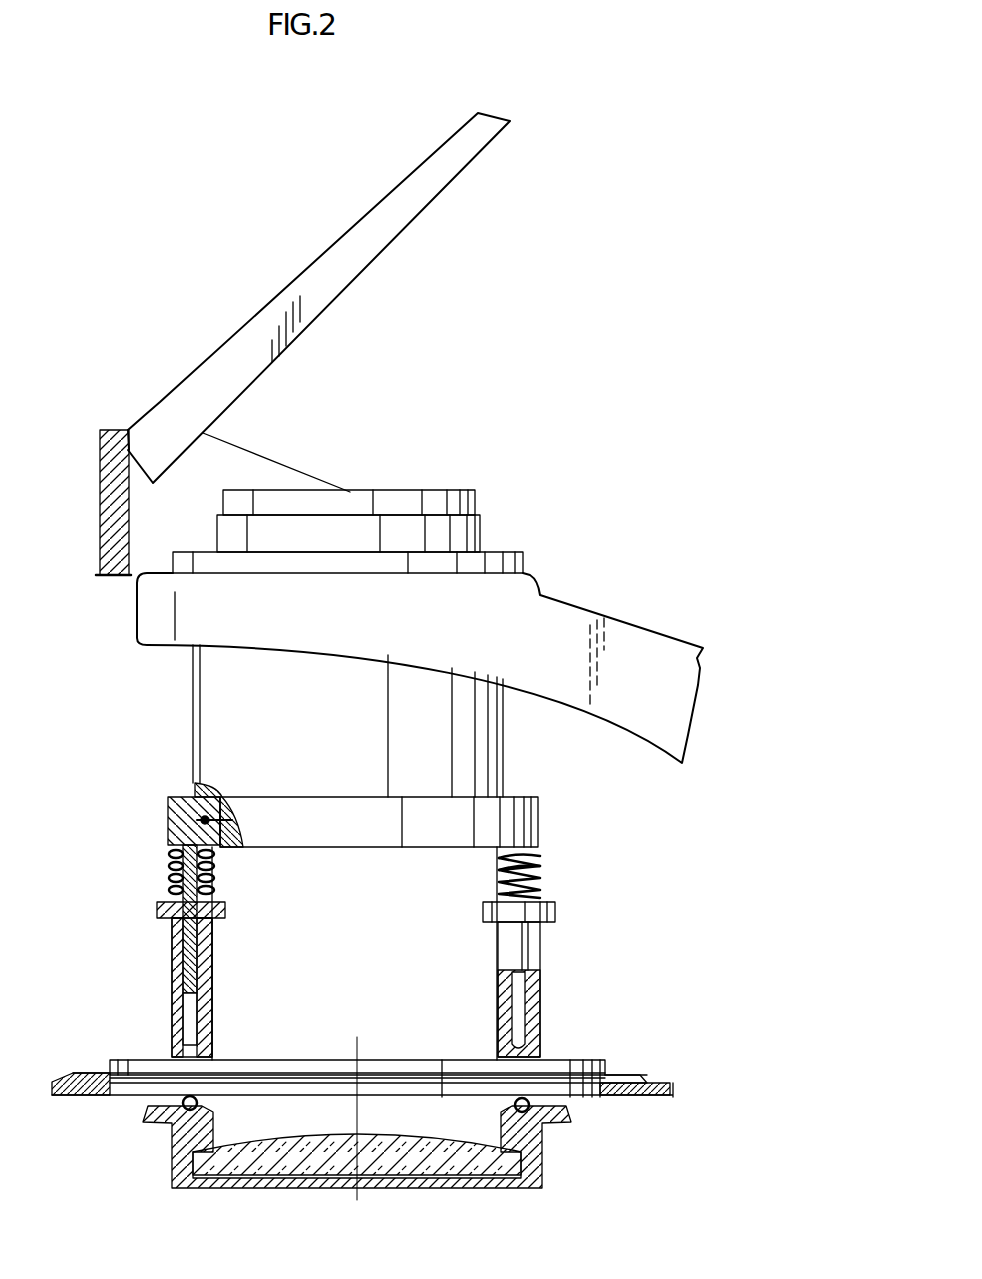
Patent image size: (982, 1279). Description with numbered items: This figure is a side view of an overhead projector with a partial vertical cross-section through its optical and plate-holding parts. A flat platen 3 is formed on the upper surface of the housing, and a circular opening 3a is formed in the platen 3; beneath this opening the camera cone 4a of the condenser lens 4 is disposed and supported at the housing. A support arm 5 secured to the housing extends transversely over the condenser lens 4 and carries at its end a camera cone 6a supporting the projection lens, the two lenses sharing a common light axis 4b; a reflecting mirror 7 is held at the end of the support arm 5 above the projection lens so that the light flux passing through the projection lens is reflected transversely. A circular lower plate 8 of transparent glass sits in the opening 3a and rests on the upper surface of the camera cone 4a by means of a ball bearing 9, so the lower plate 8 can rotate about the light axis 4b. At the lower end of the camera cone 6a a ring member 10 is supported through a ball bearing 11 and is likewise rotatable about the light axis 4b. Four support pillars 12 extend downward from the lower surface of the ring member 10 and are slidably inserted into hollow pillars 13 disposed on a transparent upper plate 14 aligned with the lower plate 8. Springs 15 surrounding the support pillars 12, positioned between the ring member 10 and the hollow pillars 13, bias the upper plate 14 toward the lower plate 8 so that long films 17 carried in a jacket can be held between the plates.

The platen 3 is at (362, 1111).
The circular opening 3a is at (605, 1097).
The condenser lens 4 is at (455, 1120).
The camera cone 4a is at (172, 1160).
The light axis 4b is at (357, 1048).
The support arm 5 is at (577, 622).
The camera cone 6a is at (203, 720).
The reflecting mirror 7 is at (232, 372).
The lower plate 8 is at (118, 1096).
The ball bearing 9 is at (178, 1110).
The ring member 10 is at (168, 828).
The ball bearing 11 is at (193, 787).
The support pillars 12 is at (185, 942).
The hollow pillars 13 is at (170, 992).
The upper plate 14 is at (240, 1063).
The springs 15 is at (170, 868).
The long films 17 is at (622, 1075).